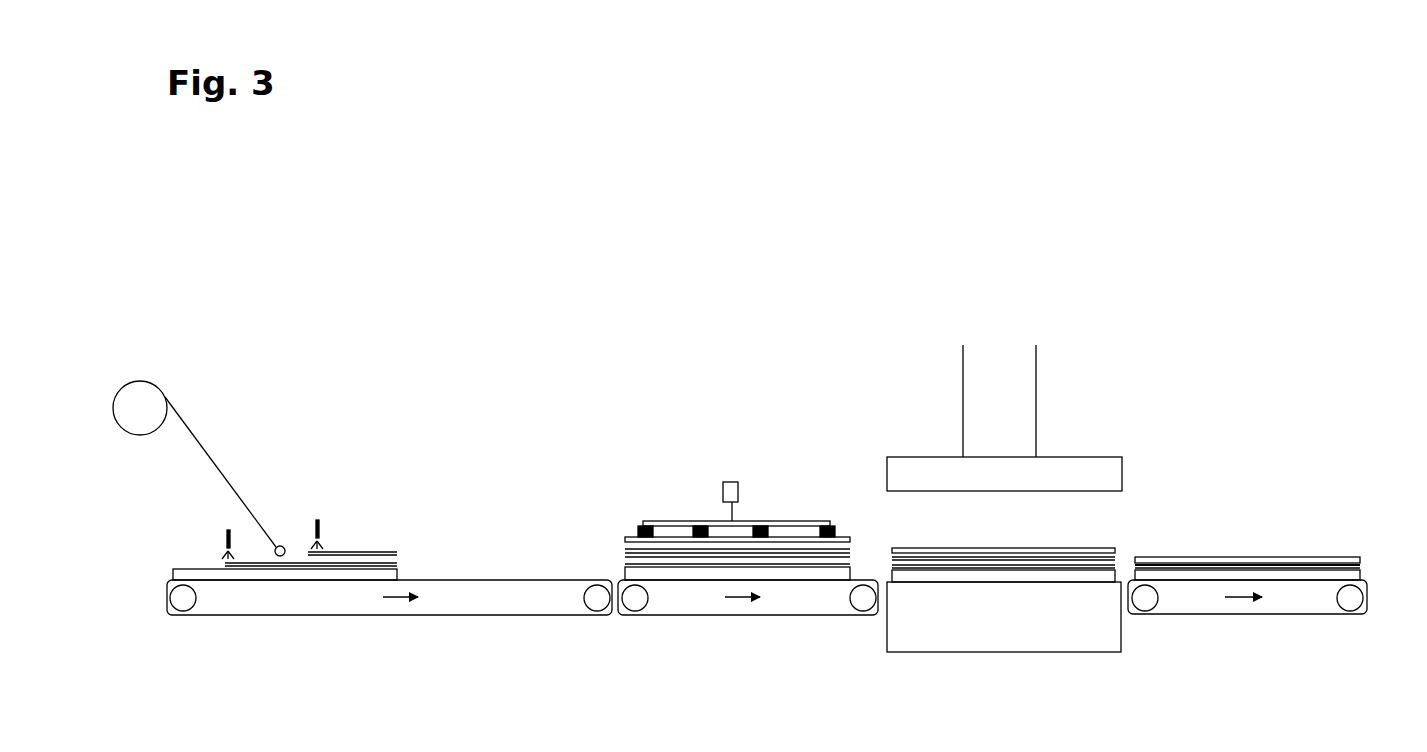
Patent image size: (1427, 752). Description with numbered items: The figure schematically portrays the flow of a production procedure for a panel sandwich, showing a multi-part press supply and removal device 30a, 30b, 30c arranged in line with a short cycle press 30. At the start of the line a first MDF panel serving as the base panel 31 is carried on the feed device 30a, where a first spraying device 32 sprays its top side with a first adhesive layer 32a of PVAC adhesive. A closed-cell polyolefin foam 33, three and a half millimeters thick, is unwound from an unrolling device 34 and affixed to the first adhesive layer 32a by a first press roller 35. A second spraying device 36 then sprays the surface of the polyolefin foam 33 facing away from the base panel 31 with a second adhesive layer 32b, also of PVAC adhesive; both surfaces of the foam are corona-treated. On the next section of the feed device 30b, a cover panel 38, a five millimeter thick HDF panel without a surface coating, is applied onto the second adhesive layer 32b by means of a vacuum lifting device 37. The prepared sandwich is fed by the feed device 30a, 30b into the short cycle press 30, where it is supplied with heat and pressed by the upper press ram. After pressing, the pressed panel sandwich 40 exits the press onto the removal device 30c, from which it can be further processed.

The short cycle press 30 is at (1100, 339).
The feed device 30a is at (243, 605).
The feed device 30b is at (738, 606).
The press removal device 30c is at (1205, 605).
The base panel 31 is at (182, 576).
The first spraying device 32 is at (223, 533).
The first adhesive layer 32a is at (398, 560).
The second adhesive layer 32b is at (353, 553).
The closed-cell polyolefin foam 33 is at (222, 475).
The unrolling device 34 is at (135, 390).
The first press roller 35 is at (278, 545).
The second spraying device 36 is at (318, 518).
The vacuum lifting device 37 is at (746, 468).
The cover panel 38 is at (836, 530).
The pressed panel sandwich 40 is at (1367, 550).